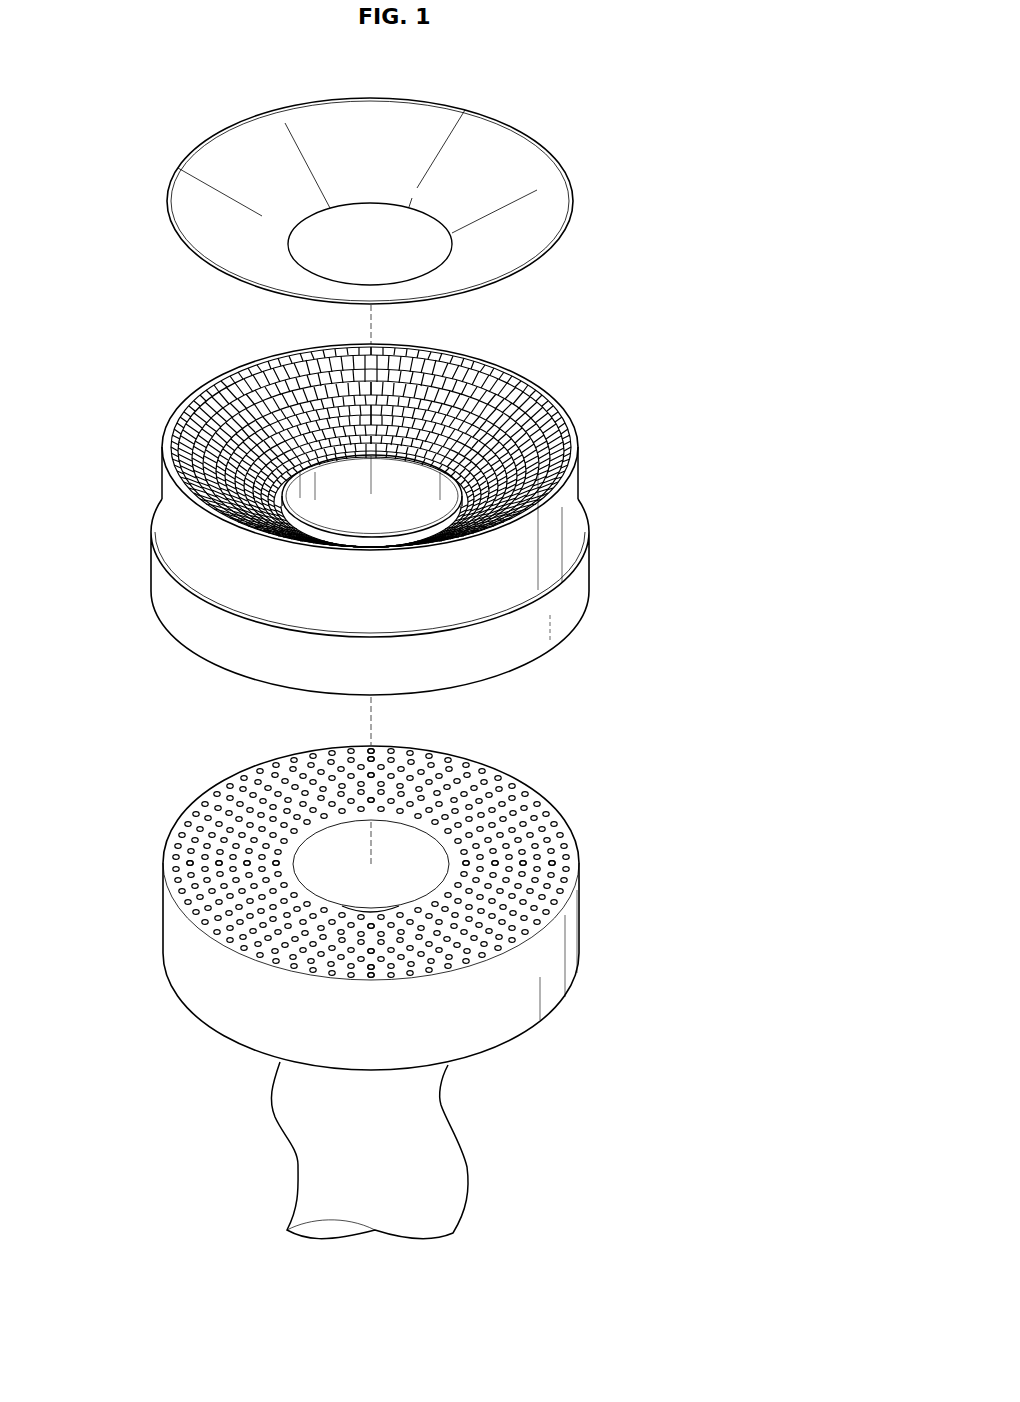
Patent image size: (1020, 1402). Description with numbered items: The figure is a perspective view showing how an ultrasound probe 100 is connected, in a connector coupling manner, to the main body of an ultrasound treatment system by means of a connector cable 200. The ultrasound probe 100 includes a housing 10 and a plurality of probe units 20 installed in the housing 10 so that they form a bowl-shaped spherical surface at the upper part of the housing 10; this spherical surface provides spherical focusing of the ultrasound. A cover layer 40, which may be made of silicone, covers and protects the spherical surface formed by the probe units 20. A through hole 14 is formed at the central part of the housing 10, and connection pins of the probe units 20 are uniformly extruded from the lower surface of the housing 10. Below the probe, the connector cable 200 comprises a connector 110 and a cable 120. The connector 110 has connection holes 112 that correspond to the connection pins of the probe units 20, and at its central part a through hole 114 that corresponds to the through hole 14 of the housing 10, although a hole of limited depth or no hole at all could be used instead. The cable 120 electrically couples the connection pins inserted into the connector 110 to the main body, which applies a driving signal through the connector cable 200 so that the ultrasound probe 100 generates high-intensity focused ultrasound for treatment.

The cover layer 40 is at (505, 124).
The probe units 20 is at (503, 442).
The ultrasound probe 100 is at (371, 494).
The housing 10 is at (581, 484).
The through hole 14 is at (385, 521).
The connector cable 200 is at (436, 982).
The connector 110 is at (410, 898).
The connection holes 112 is at (540, 828).
The through hole 114 is at (295, 867).
The cable 120 is at (439, 1150).